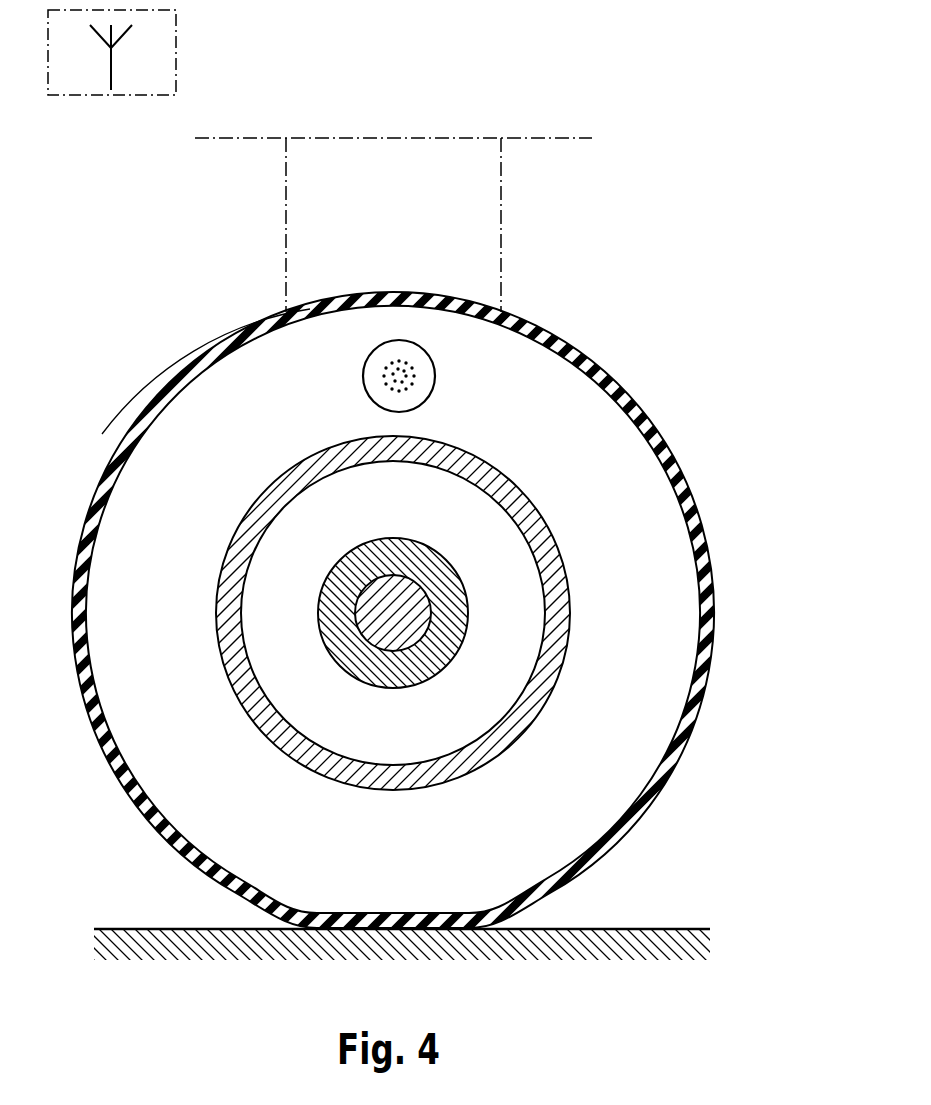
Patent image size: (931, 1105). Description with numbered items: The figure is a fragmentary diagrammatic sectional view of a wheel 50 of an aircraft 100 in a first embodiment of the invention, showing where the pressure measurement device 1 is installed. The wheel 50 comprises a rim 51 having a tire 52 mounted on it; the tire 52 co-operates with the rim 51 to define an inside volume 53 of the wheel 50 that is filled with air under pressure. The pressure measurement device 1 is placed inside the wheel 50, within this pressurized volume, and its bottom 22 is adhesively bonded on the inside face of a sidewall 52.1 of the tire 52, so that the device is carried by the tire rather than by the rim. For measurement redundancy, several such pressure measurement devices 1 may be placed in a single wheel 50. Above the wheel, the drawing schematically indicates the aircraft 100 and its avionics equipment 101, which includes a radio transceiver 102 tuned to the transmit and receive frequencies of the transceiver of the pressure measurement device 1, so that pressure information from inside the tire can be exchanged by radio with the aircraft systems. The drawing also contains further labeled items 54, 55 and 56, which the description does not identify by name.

The pressure measurement device 1 is at (361, 378).
The bottom 22 is at (400, 340).
The wheel 50 is at (651, 370).
The rim 51 is at (557, 558).
The tire 52 is at (670, 446).
The sidewall 52.1 is at (205, 425).
The inside volume 53 is at (535, 340).
The rim 54 is at (507, 613).
The wheel housing boundary 55 is at (490, 226).
The wheel housing 56 is at (221, 280).
The aircraft 100 is at (240, 140).
The avionics equipment 101 is at (178, 22).
The radio transceiver 102 is at (108, 80).